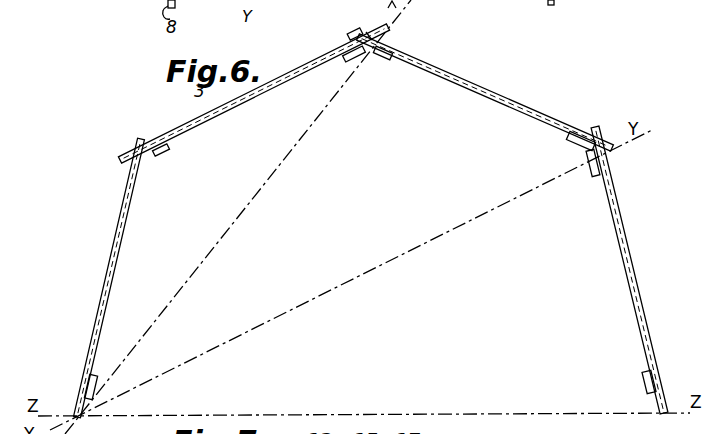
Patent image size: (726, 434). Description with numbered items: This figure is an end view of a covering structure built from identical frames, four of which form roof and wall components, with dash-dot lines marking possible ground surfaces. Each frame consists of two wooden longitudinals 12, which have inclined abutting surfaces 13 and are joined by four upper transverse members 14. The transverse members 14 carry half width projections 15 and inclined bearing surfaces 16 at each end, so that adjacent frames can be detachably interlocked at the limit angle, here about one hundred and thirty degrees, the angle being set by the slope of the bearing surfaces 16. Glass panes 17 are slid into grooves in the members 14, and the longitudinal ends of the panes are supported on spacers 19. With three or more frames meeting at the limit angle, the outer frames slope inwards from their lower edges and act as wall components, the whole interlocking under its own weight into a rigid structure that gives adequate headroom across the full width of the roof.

The wooden longitudinals 12 is at (365, 48).
The inclined abutting surfaces 13 is at (371, 44).
The upper transverse members 14 is at (525, 108).
The half width projections 15 is at (371, 33).
The inclined bearing surfaces 16 is at (380, 38).
The glass panes 17 is at (253, 93).
The spacers 19 is at (94, 376).